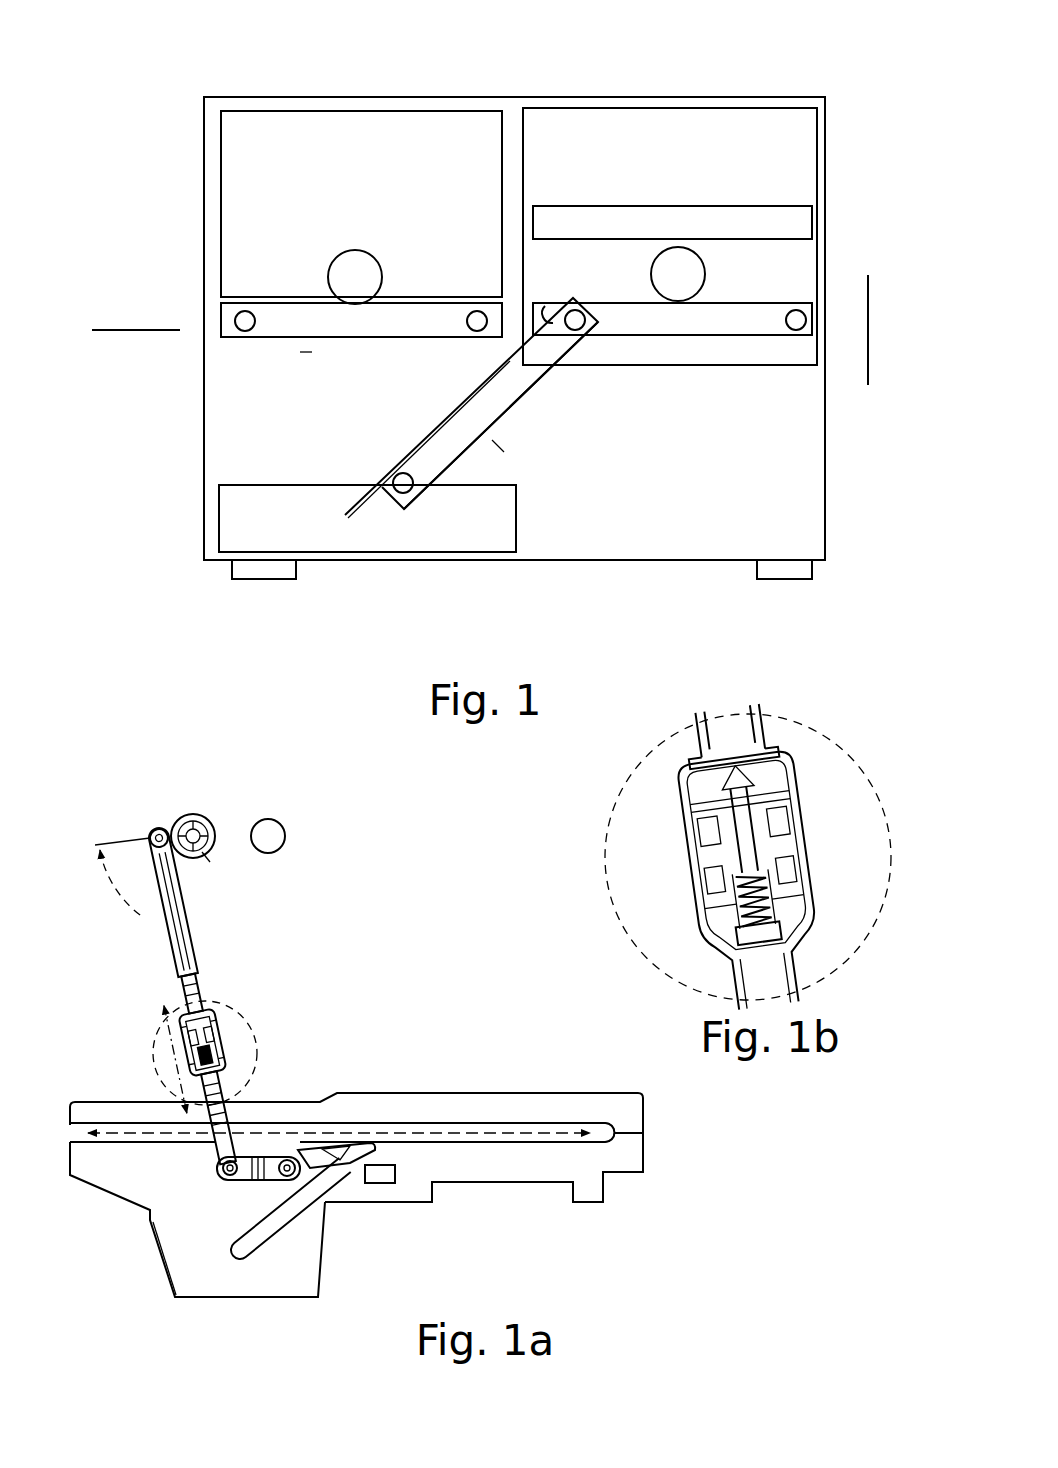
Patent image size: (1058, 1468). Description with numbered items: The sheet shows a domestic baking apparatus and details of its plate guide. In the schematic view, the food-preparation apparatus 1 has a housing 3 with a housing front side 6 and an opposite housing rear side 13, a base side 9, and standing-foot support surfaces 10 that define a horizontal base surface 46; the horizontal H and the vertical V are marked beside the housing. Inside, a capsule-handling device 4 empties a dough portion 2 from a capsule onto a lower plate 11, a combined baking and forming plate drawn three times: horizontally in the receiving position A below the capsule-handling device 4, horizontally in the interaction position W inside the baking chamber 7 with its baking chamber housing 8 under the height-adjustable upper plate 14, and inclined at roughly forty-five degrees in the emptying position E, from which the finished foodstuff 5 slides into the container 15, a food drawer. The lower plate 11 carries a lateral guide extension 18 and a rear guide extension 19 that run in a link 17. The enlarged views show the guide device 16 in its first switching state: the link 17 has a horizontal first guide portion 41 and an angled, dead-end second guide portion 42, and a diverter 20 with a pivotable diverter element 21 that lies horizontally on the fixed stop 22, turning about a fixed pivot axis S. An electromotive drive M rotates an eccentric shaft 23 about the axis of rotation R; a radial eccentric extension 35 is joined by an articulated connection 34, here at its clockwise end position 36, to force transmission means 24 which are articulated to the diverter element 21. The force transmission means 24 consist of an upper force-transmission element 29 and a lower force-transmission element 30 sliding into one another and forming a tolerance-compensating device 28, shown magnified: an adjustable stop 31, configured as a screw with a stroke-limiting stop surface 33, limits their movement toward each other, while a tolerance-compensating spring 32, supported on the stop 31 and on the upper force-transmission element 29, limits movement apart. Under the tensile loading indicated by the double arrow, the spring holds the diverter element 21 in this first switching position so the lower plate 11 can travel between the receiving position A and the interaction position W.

In FIG. 1, the food-preparation apparatus 1 is at (845, 82).
In FIG. 1, the dough portion 2 is at (357, 272).
In FIG. 1, the housing 3 is at (307, 97).
In FIG. 1, the capsule-handling device 4 is at (247, 130).
In FIG. 1, the foodstuff 5 is at (397, 507).
In FIG. 1, the housing front side 6 is at (201, 355).
In FIG. 1, the baking chamber 7 is at (803, 137).
In FIG. 1, the baking chamber housing 8 is at (770, 100).
In FIG. 1, the base side 9 is at (632, 562).
In FIG. 1, the support surfaces 10 is at (258, 580).
In FIG. 1, the lower plate 11 is at (265, 332).
In FIG. 1, the housing rear side 13 is at (823, 217).
In FIG. 1, the upper plate 14 is at (630, 227).
In FIG. 1, the container 15 is at (323, 543).
In FIG. 1A, the guide device 16 is at (438, 1062).
In FIG. 1A, the link 17 is at (353, 1132).
In FIG. 1, the lateral guide extension 18 is at (245, 320).
In FIG. 1, the rear guide extension 19 is at (796, 320).
In FIG. 1A, the diverter 20 is at (327, 1217).
In FIG. 1A, the diverter element 21 is at (349, 1172).
In FIG. 1A, the fixed stop 22 is at (392, 1190).
In FIG. 1A, the eccentric shaft 23 is at (200, 815).
In FIG. 1A, the force transmission means 24 is at (212, 975).
In FIG. 1A, the tolerance-compensating device 28 is at (160, 1062).
In FIG. 1B, the tolerance-compensating device 28 is at (605, 888).
In FIG. 1A, the upper force-transmission element 29 is at (186, 930).
In FIG. 1A, the lower force-transmission element 30 is at (275, 1158).
In FIG. 1A, the adjustable stop 31 is at (228, 1060).
In FIG. 1B, the adjustable stop 31 is at (760, 744).
In FIG. 1B, the tolerance-compensating spring 32 is at (767, 873).
In FIG. 1B, the stroke-limiting stop surface 33 is at (738, 722).
In FIG. 1A, the articulated connection 34 is at (154, 832).
In FIG. 1A, the radial eccentric extension 35 is at (165, 828).
In FIG. 1A, the end position 36 is at (127, 903).
In FIG. 1A, the first guide portion 41 is at (470, 1123).
In FIG. 1A, the second guide portion 42 is at (272, 1233).
In FIG. 1, the base surface 46 is at (578, 592).
In FIG. 1, the receiving position A is at (306, 354).
In FIG. 1A, the receiving position A is at (139, 1147).
In FIG. 1, the emptying position E is at (501, 448).
In FIG. 1, the horizontal H is at (130, 330).
In FIG. 1, the vertical V is at (868, 322).
In FIG. 1, the interaction position W is at (779, 374).
In FIG. 1A, the interaction position W is at (516, 1186).
In FIG. 1A, the electromotive drive M is at (225, 836).
In FIG. 1A, the axis of rotation R is at (208, 857).
In FIG. 1A, the pivot axis S is at (265, 1185).